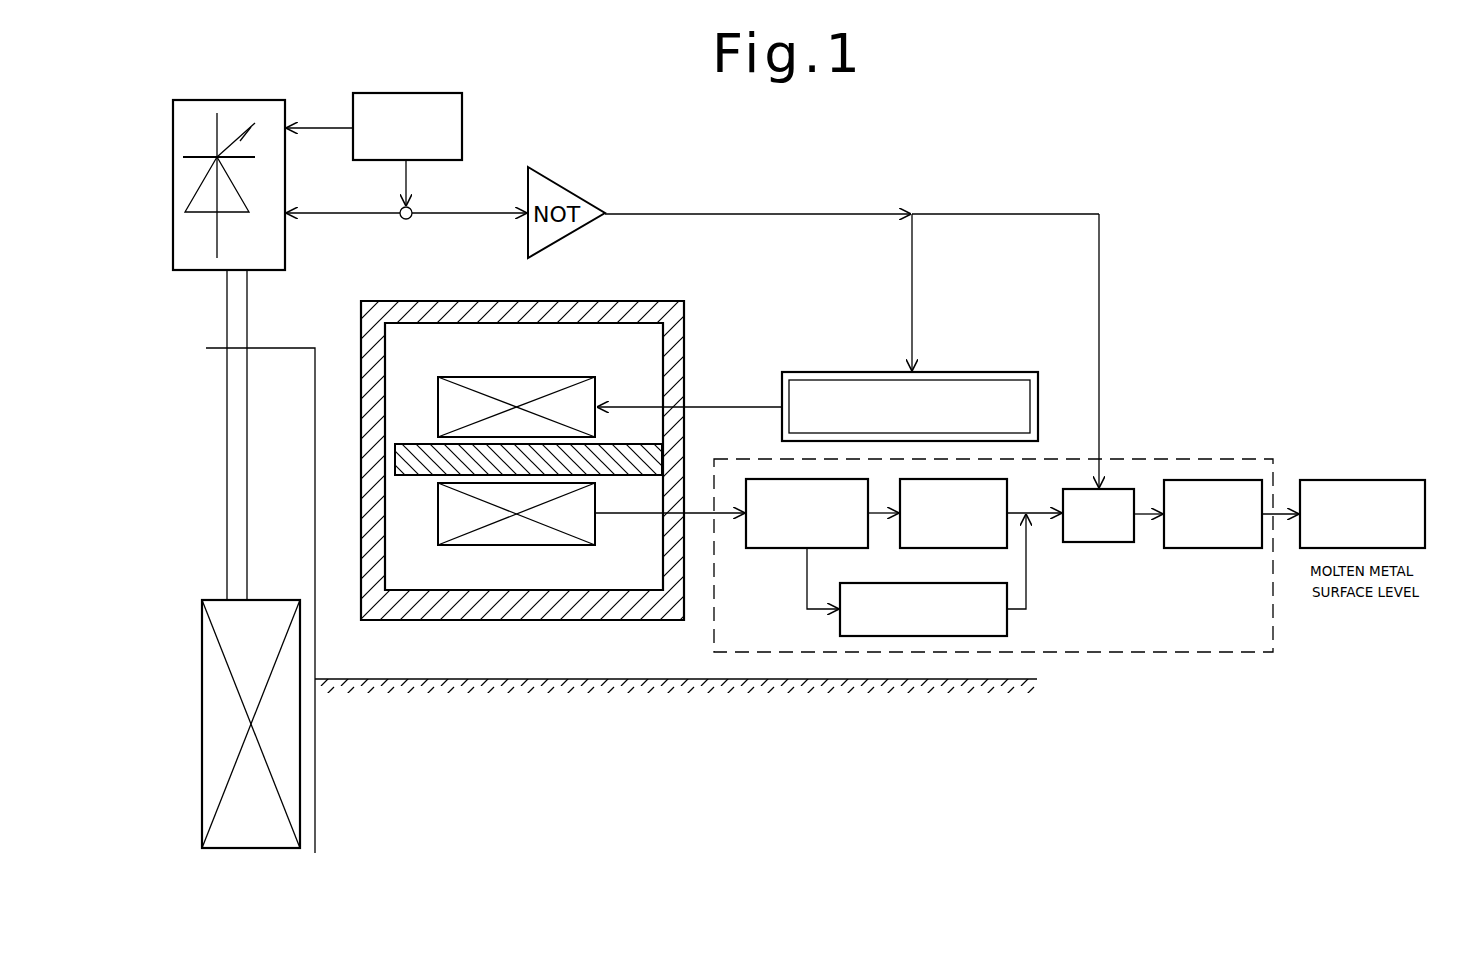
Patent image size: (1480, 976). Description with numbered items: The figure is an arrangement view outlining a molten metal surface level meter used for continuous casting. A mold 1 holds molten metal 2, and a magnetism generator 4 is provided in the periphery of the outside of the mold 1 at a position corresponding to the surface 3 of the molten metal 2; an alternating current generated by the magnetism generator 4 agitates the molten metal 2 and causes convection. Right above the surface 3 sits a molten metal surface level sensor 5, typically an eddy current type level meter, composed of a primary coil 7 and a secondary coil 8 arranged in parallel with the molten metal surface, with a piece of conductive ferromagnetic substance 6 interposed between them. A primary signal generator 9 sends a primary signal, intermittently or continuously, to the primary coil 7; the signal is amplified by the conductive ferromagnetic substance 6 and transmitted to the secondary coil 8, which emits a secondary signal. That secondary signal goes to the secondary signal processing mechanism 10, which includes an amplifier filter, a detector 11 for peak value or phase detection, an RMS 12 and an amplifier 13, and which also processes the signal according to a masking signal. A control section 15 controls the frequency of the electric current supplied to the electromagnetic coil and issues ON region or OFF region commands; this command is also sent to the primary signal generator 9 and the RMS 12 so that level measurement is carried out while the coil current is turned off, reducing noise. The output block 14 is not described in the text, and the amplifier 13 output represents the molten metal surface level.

The mold 1 is at (330, 400).
The molten metal 2 is at (610, 744).
The surface of molten metal 3 is at (426, 679).
The magnetism generator 4 is at (202, 815).
The molten metal surface level sensor 5 is at (652, 301).
The conductive ferromagnetic substance 6 is at (418, 444).
The primary coil 7 is at (568, 377).
The secondary coil 8 is at (582, 545).
The primary signal generator 9 is at (997, 372).
The secondary signal processing mechanism 10 is at (1236, 459).
The detector 11 is at (766, 548).
The RMS 12 is at (978, 548).
The amplifier 13 is at (1108, 542).
The amplifier 14 is at (1228, 548).
The control section 15 is at (462, 130).